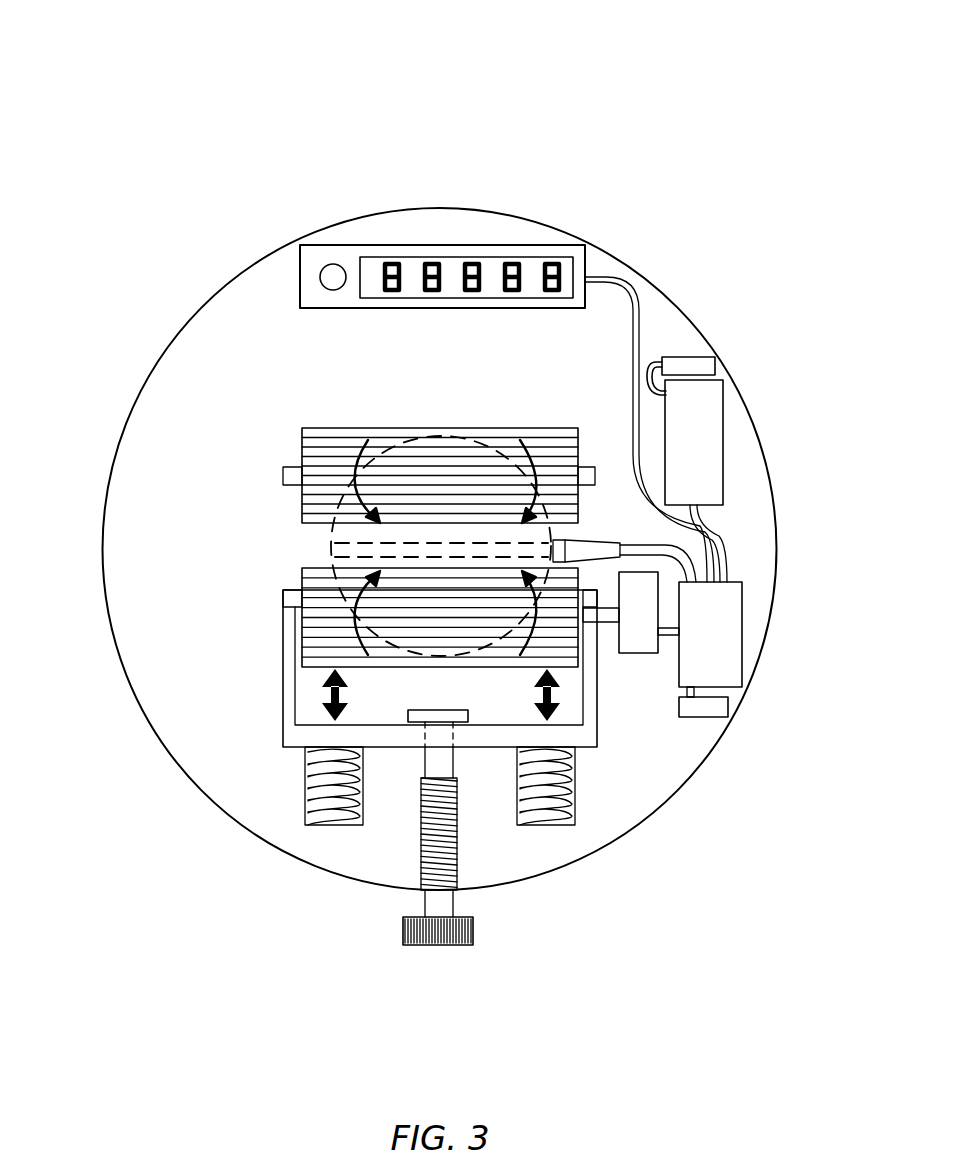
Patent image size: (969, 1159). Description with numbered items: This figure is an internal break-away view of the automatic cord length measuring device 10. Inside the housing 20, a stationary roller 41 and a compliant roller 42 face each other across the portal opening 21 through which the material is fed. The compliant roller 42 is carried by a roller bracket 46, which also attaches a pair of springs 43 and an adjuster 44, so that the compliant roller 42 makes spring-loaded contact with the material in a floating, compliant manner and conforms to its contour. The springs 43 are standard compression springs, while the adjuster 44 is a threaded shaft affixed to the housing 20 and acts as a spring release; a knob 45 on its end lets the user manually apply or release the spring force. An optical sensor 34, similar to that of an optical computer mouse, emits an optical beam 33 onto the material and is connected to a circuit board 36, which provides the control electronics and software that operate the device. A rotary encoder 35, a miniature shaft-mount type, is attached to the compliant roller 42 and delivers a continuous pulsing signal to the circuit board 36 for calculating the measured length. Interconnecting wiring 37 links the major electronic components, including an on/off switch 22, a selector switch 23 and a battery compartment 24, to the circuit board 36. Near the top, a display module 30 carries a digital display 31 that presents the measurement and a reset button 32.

The automatic cord length measuring device 10 is at (192, 132).
The housing 20 is at (168, 344).
The portal opening 21 is at (335, 530).
The on/off switch 22 is at (670, 362).
The selector switch 23 is at (710, 710).
The battery compartment 24 is at (705, 400).
The display module 30 is at (411, 245).
The digital display 31 is at (455, 257).
The reset button 32 is at (331, 265).
The optical beam 33 is at (358, 548).
The optical sensor 34 is at (600, 548).
The rotary encoder 35 is at (637, 640).
The circuit board 36 is at (725, 675).
The interconnecting wiring 37 is at (718, 568).
The stationary roller 41 is at (545, 437).
The compliant roller 42 is at (550, 617).
The pair of springs 43 is at (305, 815).
The adjuster 44 is at (453, 843).
The knob 45 is at (420, 930).
The roller bracket 46 is at (283, 710).